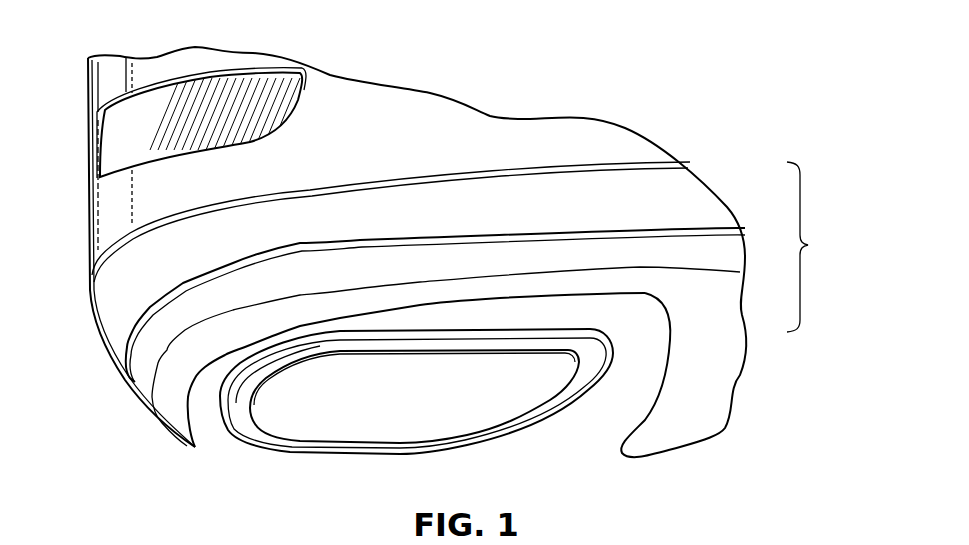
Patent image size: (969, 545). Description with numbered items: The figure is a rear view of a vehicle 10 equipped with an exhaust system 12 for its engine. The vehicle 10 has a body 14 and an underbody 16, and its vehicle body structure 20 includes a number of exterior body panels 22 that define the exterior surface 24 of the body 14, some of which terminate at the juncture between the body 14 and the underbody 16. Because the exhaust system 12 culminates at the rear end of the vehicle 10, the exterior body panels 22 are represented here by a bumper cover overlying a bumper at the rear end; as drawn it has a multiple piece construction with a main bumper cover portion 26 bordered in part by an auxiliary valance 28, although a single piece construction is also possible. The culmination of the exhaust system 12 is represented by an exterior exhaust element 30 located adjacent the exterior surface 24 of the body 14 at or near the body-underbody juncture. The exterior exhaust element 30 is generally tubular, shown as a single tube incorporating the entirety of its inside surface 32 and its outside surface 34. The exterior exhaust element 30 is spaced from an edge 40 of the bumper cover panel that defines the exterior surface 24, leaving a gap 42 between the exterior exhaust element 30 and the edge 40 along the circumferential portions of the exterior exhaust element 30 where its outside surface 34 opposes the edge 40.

The vehicle 10 is at (368, 62).
The exhaust system 12 is at (216, 444).
The body 14 is at (621, 149).
The underbody 16 is at (688, 450).
The vehicle body structure 20 is at (686, 187).
The exterior body panels 22 is at (815, 247).
The exterior surface 24 is at (641, 201).
The main bumper cover portion 26 is at (710, 208).
The auxiliary valance 28 is at (722, 304).
The exterior exhaust element 30 is at (217, 443).
The inside surface 32 is at (247, 445).
The outside surface 34 is at (293, 453).
The edge 40 is at (487, 294).
The gap 42 is at (252, 352).